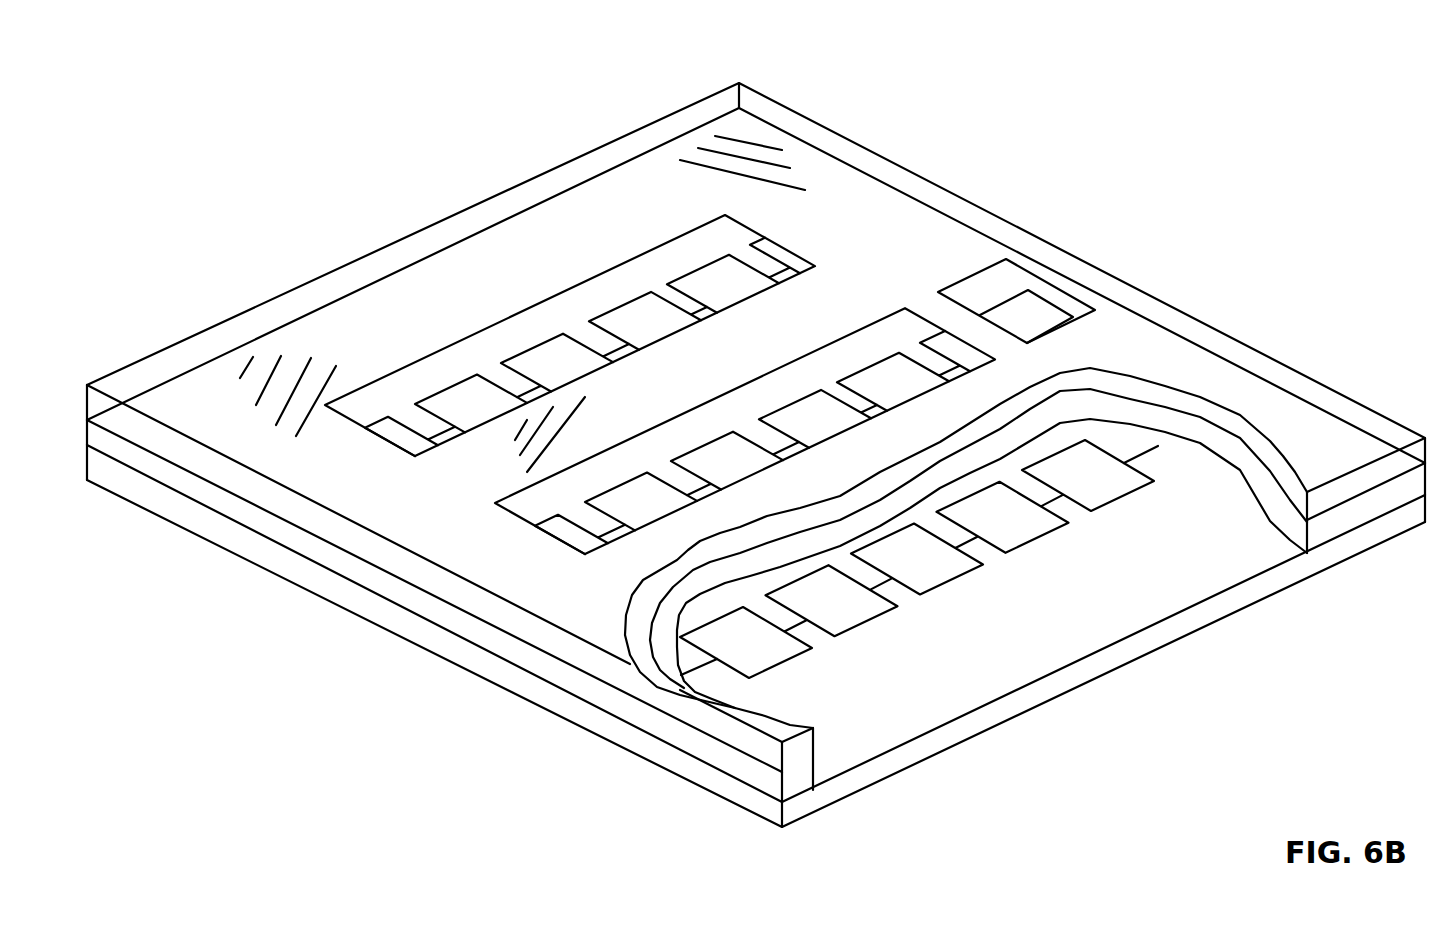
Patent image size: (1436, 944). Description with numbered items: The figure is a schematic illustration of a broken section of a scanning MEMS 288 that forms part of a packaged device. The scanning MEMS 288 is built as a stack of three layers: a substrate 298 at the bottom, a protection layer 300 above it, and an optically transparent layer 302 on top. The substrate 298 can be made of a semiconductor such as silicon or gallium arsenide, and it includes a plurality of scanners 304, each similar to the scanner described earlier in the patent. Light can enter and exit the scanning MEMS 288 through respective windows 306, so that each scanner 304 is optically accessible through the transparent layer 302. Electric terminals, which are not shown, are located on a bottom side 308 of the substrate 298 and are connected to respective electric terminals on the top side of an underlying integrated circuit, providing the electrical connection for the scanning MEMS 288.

The scanning MEMS 288 is at (515, 109).
The substrate 298 is at (625, 735).
The protection layer 300 is at (553, 675).
The optically transparent layer 302 is at (462, 596).
The scanners 304 is at (558, 334).
The windows 306 is at (722, 215).
The bottom side 308 is at (1139, 683).